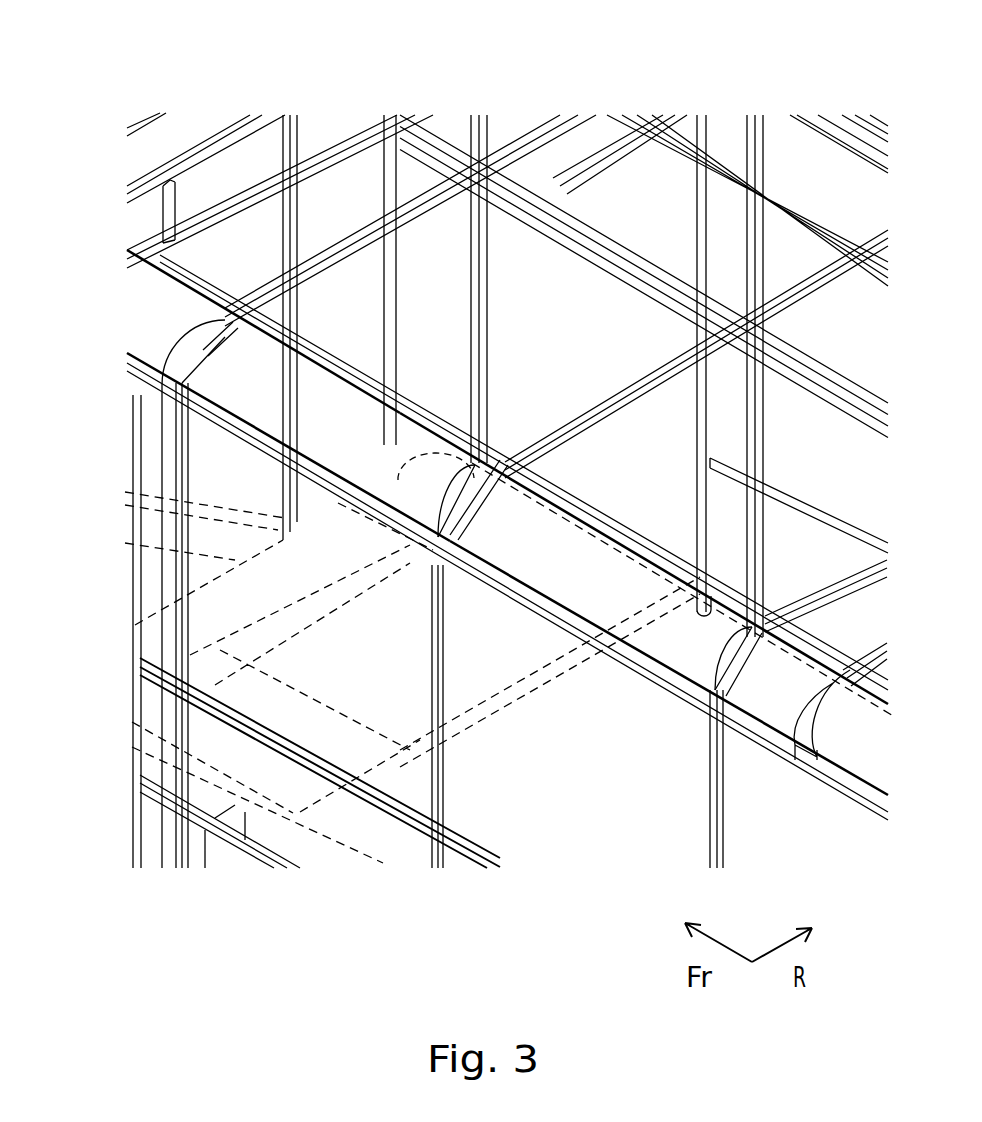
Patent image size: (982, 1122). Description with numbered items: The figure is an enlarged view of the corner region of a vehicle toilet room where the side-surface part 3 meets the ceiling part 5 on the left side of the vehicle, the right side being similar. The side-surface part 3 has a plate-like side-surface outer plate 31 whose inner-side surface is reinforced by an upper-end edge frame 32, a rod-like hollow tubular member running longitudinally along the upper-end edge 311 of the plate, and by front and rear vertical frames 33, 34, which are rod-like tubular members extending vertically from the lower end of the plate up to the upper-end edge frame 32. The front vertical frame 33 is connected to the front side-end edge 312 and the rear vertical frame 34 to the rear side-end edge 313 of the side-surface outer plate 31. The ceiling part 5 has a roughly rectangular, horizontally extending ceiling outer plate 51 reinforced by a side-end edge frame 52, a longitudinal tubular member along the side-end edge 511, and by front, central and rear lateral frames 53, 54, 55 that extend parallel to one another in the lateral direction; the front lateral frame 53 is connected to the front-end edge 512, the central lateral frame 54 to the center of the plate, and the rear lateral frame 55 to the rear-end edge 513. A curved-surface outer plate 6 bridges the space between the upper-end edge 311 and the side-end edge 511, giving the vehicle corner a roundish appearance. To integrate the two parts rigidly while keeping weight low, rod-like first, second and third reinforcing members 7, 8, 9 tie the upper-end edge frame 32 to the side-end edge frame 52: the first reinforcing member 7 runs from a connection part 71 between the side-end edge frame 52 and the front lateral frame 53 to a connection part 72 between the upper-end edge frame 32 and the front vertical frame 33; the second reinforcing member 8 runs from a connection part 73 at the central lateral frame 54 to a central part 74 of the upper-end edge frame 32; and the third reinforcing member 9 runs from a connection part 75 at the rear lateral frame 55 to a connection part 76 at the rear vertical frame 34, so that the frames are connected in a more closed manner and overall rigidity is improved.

The side-surface part 3 is at (80, 628).
The ceiling part 5 is at (717, 82).
The curved-surface outer plate 6 is at (545, 545).
The first reinforcing member 7 is at (218, 357).
The second reinforcing member 8 is at (470, 510).
The third reinforcing member 9 is at (740, 667).
The side-surface outer plate 31 is at (290, 638).
The upper-end edge frame 32 is at (323, 463).
The front vertical frame 33 is at (185, 578).
The rear vertical frame 34 is at (712, 775).
The ceiling outer plate 51 is at (540, 280).
The side-end edge frame 52 is at (335, 365).
The front lateral frame 53 is at (422, 205).
The central lateral frame 54 is at (595, 400).
The rear lateral frame 55 is at (820, 578).
The connection part 71 is at (232, 302).
The connection part 72 is at (178, 380).
The connection part 73 is at (495, 455).
The central part 74 is at (443, 532).
The connection part 75 is at (780, 618).
The connection part 76 is at (715, 683).
The upper-end edge 311 is at (510, 580).
The front side-end edge 312 is at (190, 667).
The rear side-end edge 313 is at (703, 862).
The side-end edge 511 is at (430, 418).
The front-end edge 512 is at (398, 260).
The rear-end edge 513 is at (877, 543).